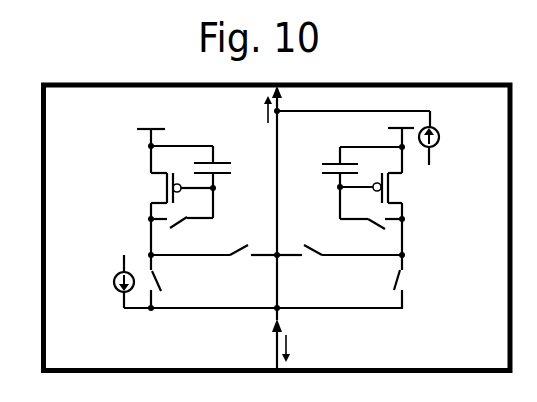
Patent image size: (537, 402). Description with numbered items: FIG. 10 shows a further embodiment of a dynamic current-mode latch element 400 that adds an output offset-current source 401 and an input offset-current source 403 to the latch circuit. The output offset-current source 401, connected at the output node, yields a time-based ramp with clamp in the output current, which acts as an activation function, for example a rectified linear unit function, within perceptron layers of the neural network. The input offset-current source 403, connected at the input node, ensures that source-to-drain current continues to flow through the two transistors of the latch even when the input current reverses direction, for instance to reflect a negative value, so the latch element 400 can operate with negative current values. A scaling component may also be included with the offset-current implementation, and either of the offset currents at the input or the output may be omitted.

The dynamic current-mode latch element 400 is at (470, 344).
The output offset-current source 401 is at (440, 121).
The input offset-current source 403 is at (118, 297).